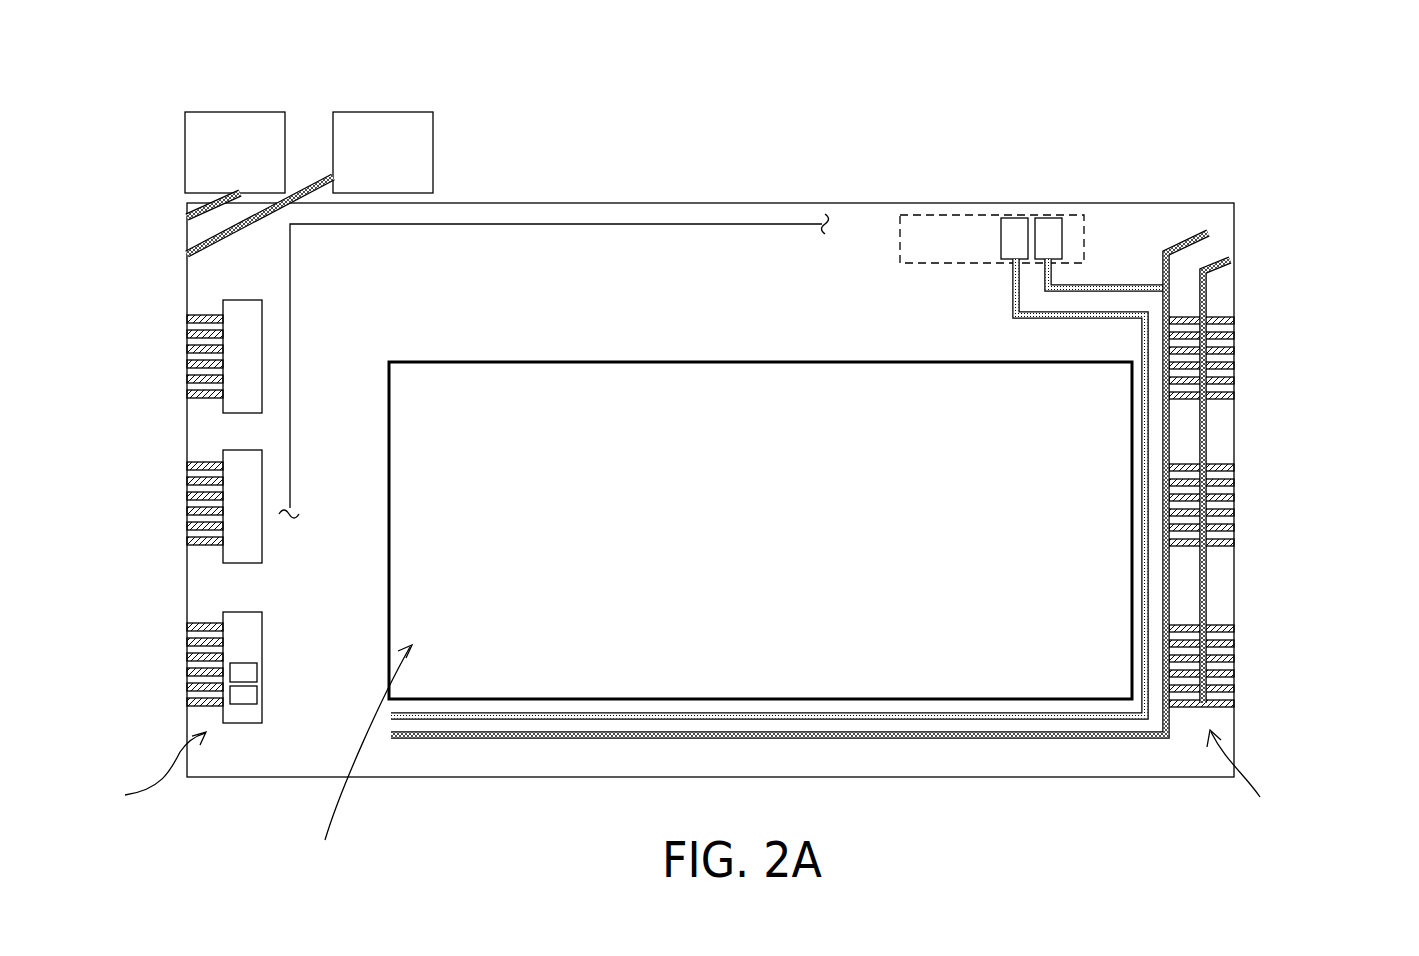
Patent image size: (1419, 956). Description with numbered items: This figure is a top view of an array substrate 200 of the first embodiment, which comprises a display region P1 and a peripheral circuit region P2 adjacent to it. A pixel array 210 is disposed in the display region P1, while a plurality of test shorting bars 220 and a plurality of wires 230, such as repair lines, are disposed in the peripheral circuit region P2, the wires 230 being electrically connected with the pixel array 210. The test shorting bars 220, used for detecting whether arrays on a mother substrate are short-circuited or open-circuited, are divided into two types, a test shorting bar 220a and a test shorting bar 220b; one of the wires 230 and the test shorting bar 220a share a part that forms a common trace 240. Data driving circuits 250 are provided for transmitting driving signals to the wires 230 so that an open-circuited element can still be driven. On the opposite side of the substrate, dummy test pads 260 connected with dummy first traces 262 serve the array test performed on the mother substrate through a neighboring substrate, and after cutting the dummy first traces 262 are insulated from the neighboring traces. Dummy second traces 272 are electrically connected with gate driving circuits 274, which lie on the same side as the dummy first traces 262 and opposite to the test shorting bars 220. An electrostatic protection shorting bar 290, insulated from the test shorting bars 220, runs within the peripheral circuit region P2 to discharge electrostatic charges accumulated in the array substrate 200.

The array substrate 200 is at (1352, 839).
The pixel array 210 is at (488, 665).
The test shorting bars 220 is at (901, 463).
The test shorting bar 220a is at (1170, 306).
The test shorting bar 220b is at (1207, 310).
The wires 230 is at (1107, 313).
The common trace 240 is at (1168, 562).
The data driving circuits 250 is at (1049, 218).
The dummy test pads 260 is at (405, 116).
The dummy first traces 262 is at (200, 205).
The dummy second traces 272 is at (187, 658).
The gate driving circuits 274 is at (233, 310).
The electrostatic protection shorting bar 290 is at (665, 224).
The display region P1 is at (357, 758).
The peripheral circuit region P2 is at (683, 787).